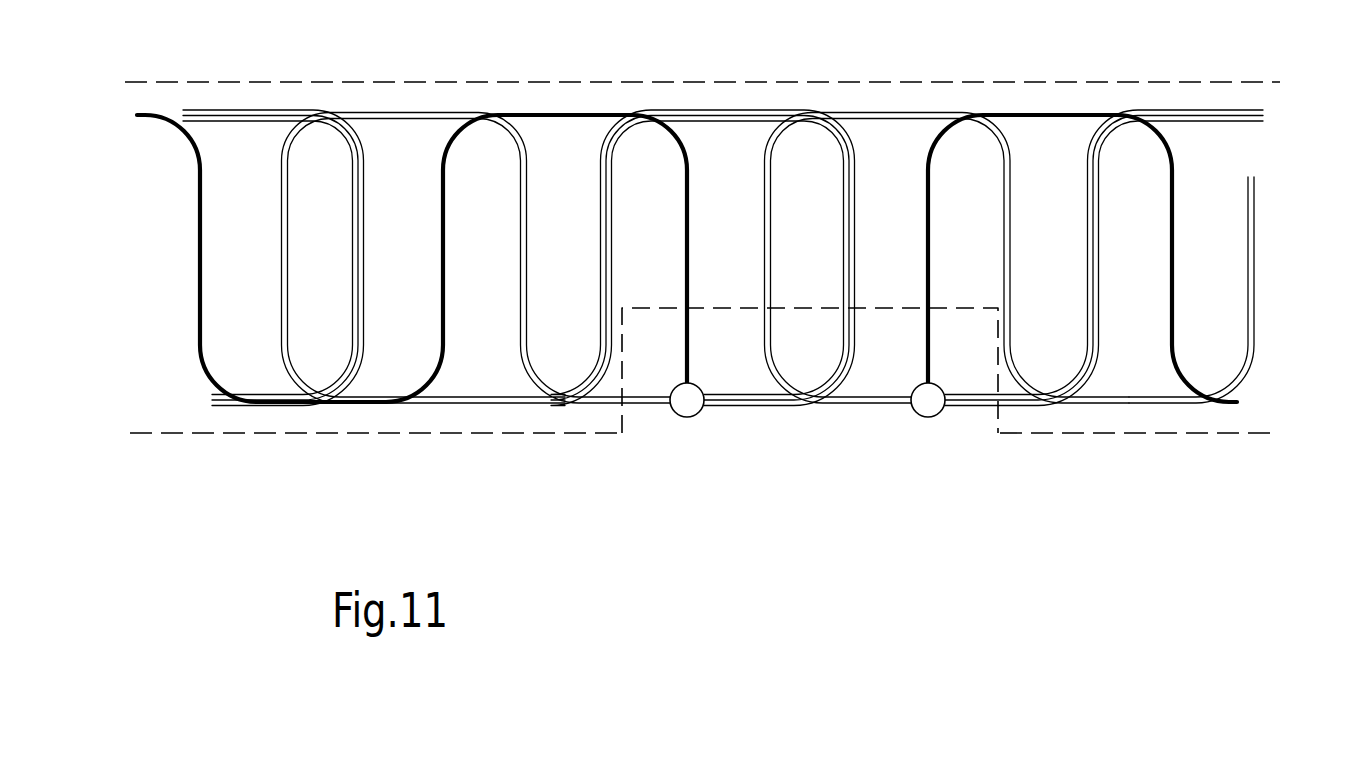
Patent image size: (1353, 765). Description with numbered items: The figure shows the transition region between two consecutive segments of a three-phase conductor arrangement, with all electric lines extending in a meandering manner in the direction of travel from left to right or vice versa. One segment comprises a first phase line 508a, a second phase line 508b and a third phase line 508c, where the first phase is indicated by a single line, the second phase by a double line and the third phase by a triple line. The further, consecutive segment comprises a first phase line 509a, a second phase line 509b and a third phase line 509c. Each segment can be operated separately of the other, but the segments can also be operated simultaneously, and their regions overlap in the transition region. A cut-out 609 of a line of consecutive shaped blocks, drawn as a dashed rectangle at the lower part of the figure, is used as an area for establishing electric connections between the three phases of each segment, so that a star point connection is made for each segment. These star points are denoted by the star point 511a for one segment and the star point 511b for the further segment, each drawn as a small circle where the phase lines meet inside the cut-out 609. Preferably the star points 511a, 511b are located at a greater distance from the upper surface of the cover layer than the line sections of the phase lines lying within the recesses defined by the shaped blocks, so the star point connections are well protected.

The first phase line 508a is at (197, 257).
The second phase line 508b is at (282, 242).
The third phase line 508c is at (352, 222).
The first phase line of the further segment 509a is at (967, 250).
The second phase line of the further segment 509b is at (765, 275).
The third phase line of the further segment 509c is at (1143, 245).
The star point 511a is at (700, 417).
The star point 511b is at (940, 412).
The cut-out 609 is at (851, 450).